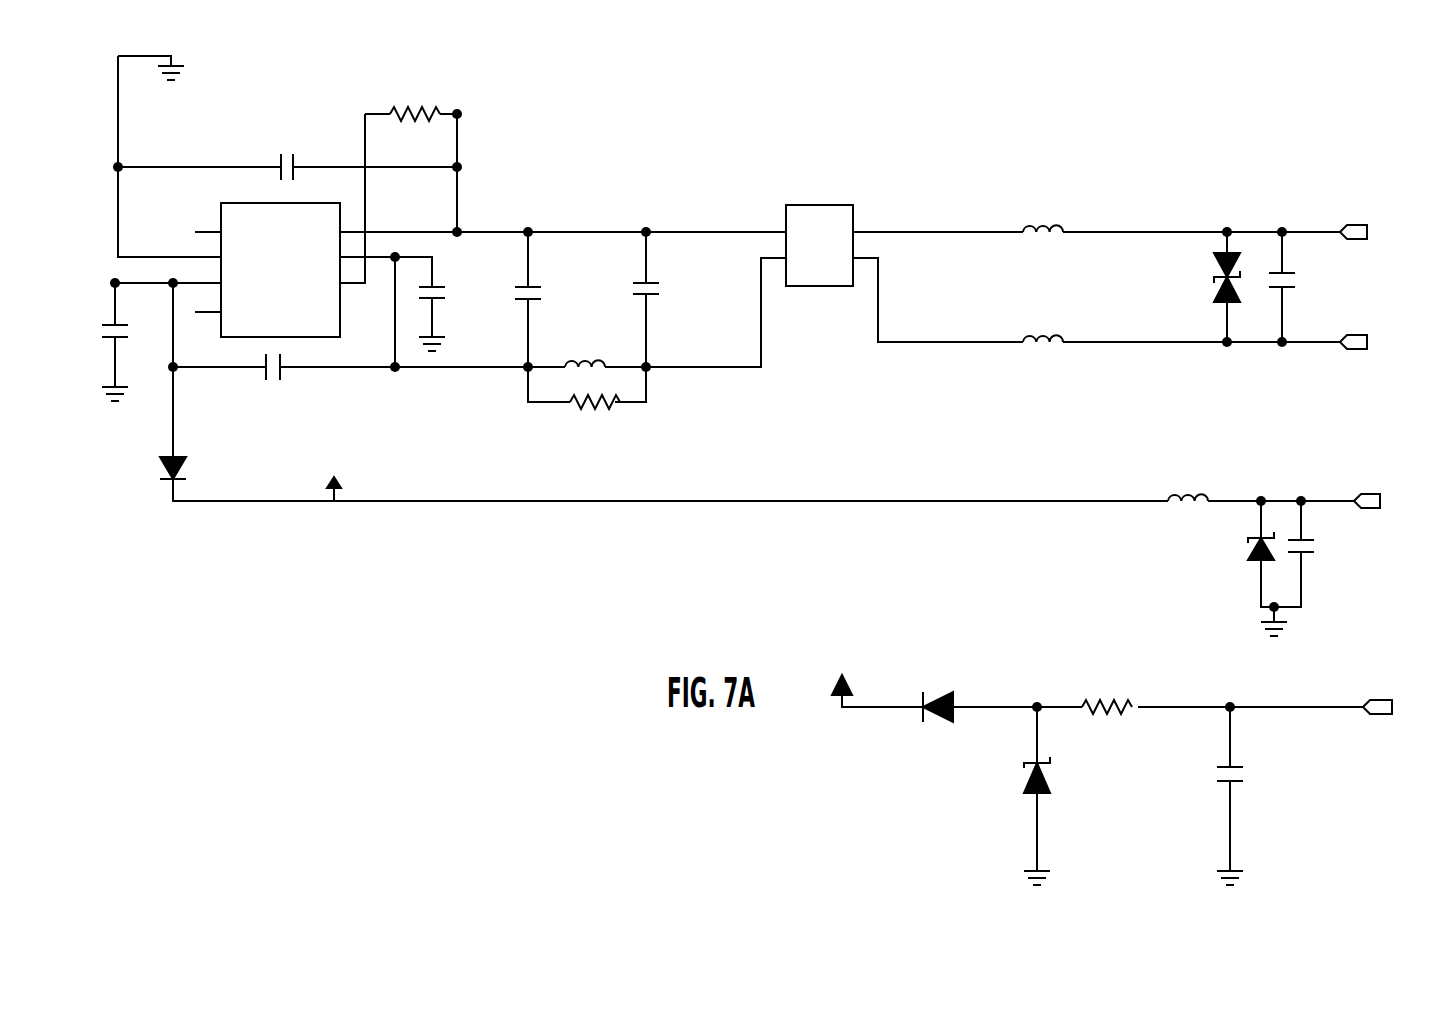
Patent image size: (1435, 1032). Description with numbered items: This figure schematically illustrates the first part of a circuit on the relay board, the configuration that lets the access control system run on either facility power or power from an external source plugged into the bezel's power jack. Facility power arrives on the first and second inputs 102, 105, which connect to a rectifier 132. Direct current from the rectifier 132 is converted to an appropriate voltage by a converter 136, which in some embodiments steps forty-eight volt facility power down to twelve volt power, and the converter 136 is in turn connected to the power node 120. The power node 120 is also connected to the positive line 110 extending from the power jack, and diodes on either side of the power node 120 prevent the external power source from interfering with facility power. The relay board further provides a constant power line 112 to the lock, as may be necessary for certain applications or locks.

The first input 102 is at (1374, 233).
The second input 105 is at (1374, 343).
The positive line 110 is at (1397, 708).
The constant power line 112 is at (1386, 502).
The power node 120 is at (588, 569).
The rectifier 132 is at (813, 205).
The converter 136 is at (330, 337).